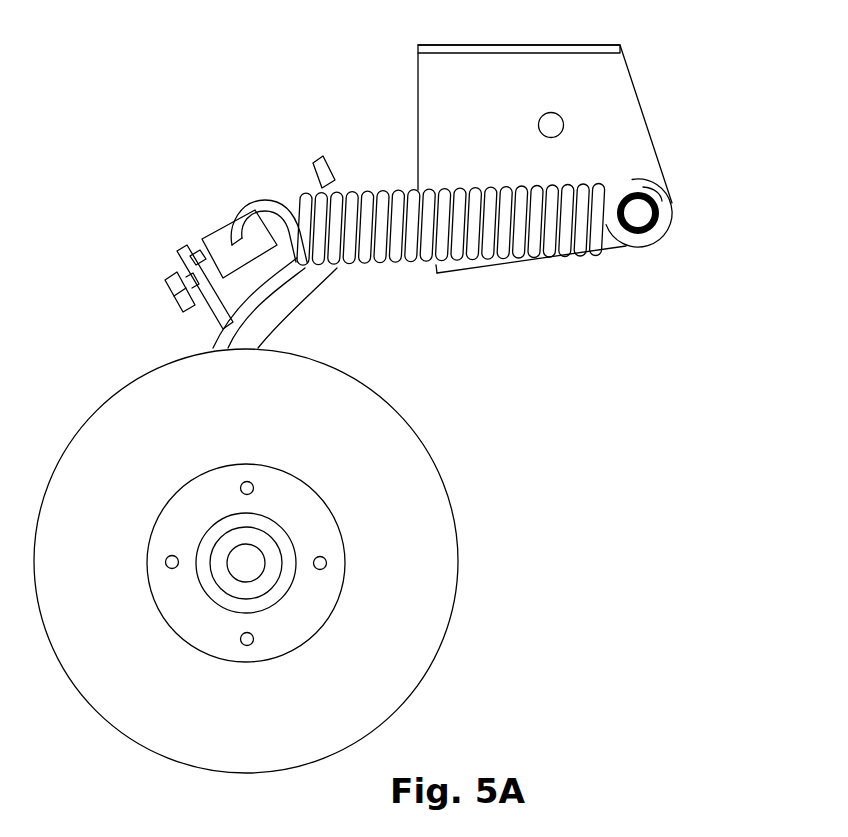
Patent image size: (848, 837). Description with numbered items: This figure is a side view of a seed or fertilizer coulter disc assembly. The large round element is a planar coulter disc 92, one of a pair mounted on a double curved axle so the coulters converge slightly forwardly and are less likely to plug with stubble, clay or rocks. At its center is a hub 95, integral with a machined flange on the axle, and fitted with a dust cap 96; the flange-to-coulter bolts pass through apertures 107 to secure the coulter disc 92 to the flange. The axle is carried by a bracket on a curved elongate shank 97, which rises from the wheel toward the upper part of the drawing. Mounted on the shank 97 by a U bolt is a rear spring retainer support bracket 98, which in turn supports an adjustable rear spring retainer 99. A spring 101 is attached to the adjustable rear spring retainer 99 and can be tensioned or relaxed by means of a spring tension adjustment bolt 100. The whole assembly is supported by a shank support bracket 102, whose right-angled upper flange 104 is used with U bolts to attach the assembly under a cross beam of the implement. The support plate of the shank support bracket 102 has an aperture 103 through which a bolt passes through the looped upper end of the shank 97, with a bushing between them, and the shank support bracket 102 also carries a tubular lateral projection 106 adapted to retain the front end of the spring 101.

The planar coulter disc 92 is at (459, 561).
The hub 95 is at (260, 540).
The dust cap 96 is at (257, 565).
The curved elongate shank 97 is at (305, 278).
The rear spring retainer support bracket 98 is at (250, 314).
The adjustable rear spring retainer 99 is at (212, 230).
The spring tension adjustment bolt 100 is at (170, 297).
The spring 101 is at (553, 257).
The shank support bracket 102 is at (637, 155).
The aperture 103 is at (547, 128).
The right-angled upper flange 104 is at (607, 44).
The tubular lateral projection 106 is at (640, 212).
The aperture 107 is at (328, 563).